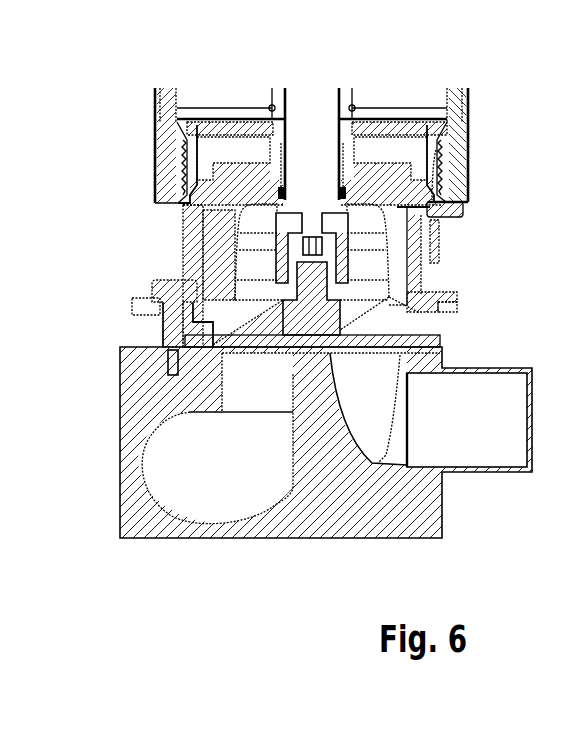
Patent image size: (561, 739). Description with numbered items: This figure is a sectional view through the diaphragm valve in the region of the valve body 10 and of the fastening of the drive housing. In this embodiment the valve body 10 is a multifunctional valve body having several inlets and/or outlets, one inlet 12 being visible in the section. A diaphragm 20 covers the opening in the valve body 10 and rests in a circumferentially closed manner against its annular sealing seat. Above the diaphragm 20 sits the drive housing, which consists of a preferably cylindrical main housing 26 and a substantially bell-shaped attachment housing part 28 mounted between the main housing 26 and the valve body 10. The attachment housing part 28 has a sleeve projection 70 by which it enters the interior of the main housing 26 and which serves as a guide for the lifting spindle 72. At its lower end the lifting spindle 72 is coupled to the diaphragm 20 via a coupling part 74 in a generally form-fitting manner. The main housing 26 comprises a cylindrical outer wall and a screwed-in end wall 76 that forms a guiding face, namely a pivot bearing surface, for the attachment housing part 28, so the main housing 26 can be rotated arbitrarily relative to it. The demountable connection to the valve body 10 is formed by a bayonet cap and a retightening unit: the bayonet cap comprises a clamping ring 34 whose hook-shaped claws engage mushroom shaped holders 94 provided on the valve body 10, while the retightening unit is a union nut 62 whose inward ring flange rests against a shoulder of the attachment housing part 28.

The valve body 10 is at (158, 525).
The inlet 12 is at (483, 438).
The diaphragm 20 is at (412, 339).
The main housing 26 is at (462, 106).
The attachment housing part 28 is at (400, 250).
The clamping ring 34 is at (440, 306).
The union nut 62 is at (415, 208).
The sleeve projection 70 is at (348, 97).
The lifting spindle 72 is at (308, 108).
The coupling part 74 is at (265, 273).
The screwed-in end wall 76 is at (428, 168).
The mushroom shaped holder 94 is at (170, 340).